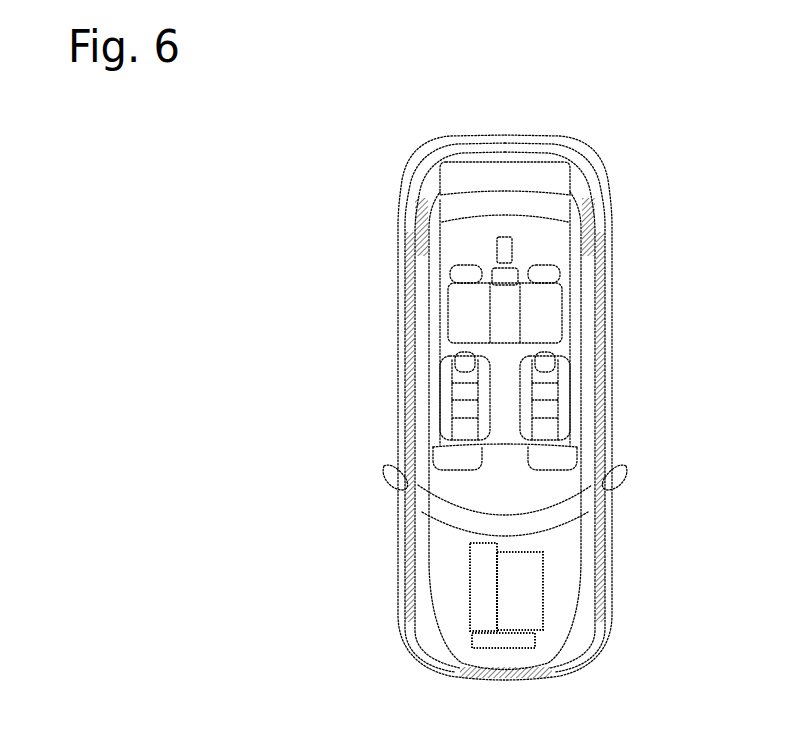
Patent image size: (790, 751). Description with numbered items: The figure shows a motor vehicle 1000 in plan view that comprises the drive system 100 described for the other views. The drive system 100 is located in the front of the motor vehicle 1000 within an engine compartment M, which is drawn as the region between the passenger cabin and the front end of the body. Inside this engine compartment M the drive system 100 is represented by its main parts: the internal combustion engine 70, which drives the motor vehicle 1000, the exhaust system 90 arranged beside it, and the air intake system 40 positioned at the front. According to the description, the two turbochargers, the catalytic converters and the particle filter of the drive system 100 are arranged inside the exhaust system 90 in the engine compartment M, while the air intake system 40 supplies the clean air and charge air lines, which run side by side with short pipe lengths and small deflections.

The motor vehicle 1000 is at (332, 376).
The engine compartment M is at (438, 565).
The exhaust system 90 is at (470, 590).
The internal combustion engine 70 is at (543, 590).
The drive system 100 is at (492, 639).
The air intake system 40 is at (503, 648).